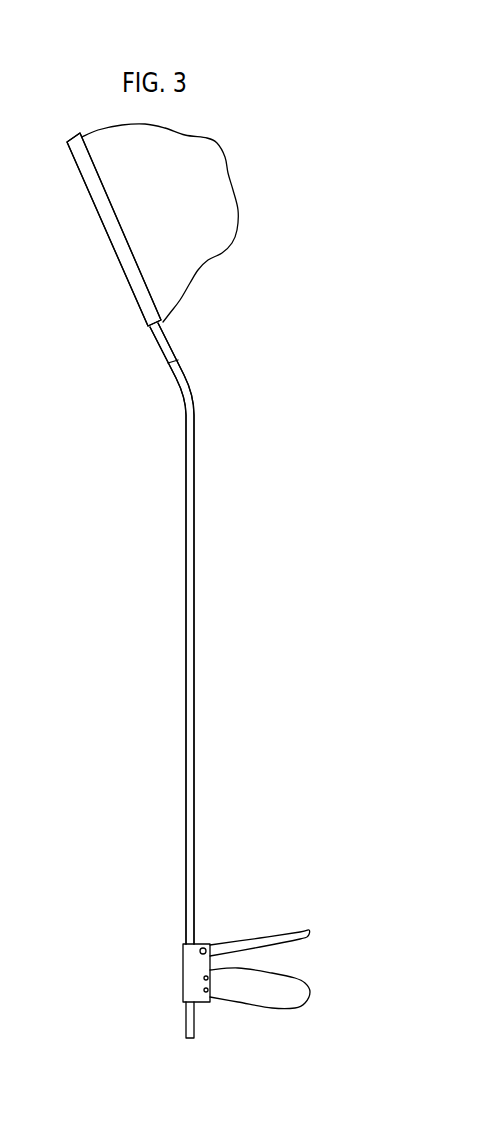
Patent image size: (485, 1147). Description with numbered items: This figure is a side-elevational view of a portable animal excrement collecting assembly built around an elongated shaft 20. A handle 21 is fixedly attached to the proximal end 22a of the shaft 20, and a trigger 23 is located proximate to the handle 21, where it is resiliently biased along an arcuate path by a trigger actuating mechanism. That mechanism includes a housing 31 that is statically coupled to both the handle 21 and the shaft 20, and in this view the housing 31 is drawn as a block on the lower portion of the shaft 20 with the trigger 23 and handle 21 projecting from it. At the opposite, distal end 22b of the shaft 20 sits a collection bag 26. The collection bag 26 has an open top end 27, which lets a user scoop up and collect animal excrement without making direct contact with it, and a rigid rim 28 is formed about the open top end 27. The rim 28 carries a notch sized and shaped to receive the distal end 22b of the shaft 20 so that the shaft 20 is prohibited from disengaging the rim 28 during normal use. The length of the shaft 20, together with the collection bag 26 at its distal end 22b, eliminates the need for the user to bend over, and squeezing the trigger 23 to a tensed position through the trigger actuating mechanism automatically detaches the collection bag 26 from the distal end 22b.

The elongated shaft 20 is at (205, 666).
The handle 21 is at (311, 992).
The proximal end of shaft 22a is at (247, 1040).
The distal end of shaft 22b is at (215, 628).
The trigger 23 is at (268, 933).
The collection bag 26 is at (223, 137).
The open top end 27 is at (98, 216).
The rigid rim 28 is at (138, 287).
The housing 31 is at (146, 973).